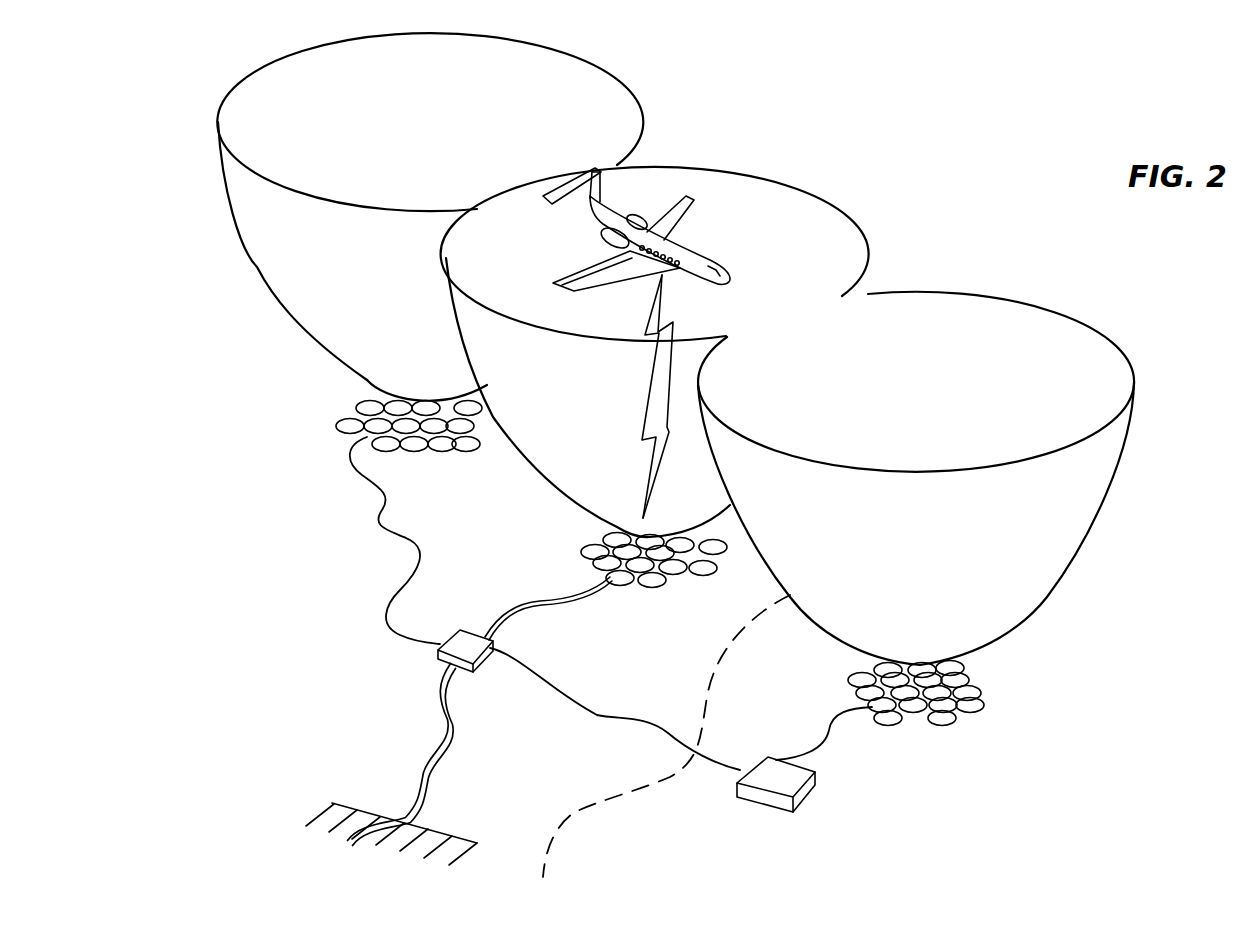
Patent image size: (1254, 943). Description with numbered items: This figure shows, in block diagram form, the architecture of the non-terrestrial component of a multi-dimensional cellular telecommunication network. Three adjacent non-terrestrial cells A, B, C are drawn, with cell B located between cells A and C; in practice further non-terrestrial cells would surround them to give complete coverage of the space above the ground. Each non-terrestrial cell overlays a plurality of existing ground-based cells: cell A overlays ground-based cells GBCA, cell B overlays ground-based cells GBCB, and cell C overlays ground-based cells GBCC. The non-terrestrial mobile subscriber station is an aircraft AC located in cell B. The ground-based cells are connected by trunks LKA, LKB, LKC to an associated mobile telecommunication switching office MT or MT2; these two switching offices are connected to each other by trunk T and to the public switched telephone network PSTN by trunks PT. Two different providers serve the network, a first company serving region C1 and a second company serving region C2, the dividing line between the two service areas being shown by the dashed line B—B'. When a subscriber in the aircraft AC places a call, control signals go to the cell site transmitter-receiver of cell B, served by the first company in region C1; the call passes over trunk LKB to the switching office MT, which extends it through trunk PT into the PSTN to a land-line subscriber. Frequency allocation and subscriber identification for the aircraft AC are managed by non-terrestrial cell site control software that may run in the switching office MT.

The non-terrestrial cell A is at (430, 217).
The non-terrestrial cell B is at (655, 352).
The non-terrestrial cell C is at (916, 478).
The aircraft AC is at (705, 258).
The ground-based cells GBCA is at (347, 425).
The ground-based cells GBCB is at (608, 560).
The ground-based cells GBCC is at (977, 690).
The trunk LKA is at (386, 488).
The trunk LKB is at (550, 602).
The trunk LKC is at (823, 751).
The trunk T is at (629, 714).
The mobile telecommunication switching office MT is at (440, 653).
The mobile telecommunication switching office MT2 is at (760, 795).
The trunk PT is at (425, 762).
The public switched telephone network PSTN is at (408, 843).
The dashed line B— B' is at (663, 742).
The region C1 is at (297, 622).
The region C2 is at (967, 787).